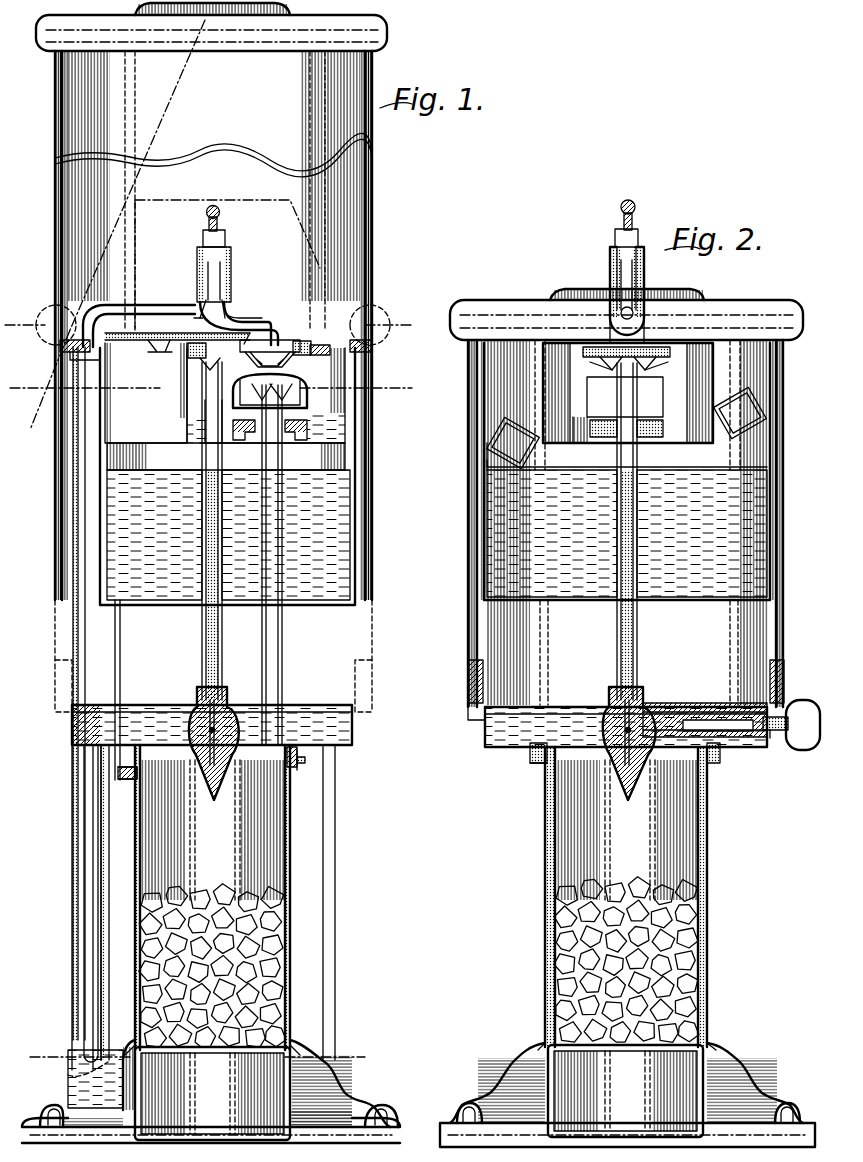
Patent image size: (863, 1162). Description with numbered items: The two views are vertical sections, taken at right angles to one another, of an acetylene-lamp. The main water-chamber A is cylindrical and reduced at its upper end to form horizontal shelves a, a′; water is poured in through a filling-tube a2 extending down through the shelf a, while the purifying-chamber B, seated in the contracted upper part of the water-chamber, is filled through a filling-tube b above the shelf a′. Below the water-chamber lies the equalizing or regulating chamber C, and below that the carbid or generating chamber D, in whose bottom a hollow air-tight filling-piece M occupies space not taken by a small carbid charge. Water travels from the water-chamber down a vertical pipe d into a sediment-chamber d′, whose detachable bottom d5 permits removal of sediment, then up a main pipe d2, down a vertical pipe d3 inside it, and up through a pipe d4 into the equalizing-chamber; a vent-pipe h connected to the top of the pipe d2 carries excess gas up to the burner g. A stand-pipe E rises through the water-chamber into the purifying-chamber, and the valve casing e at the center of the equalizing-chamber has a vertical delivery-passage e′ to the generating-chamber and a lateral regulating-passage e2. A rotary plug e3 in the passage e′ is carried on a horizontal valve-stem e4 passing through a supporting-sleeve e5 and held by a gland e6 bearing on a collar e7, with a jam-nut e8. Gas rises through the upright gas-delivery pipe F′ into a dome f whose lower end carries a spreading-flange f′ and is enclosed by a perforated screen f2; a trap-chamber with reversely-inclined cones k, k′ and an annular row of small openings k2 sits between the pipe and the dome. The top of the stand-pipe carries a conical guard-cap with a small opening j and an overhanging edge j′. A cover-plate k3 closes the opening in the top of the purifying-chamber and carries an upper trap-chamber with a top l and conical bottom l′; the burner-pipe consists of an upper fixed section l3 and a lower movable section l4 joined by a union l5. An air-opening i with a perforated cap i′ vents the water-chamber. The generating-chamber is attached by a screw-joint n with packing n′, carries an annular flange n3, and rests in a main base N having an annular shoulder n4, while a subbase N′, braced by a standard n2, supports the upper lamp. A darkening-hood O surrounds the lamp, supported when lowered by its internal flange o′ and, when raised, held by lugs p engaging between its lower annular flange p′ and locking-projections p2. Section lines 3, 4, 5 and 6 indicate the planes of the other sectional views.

In FIG. 1, the darkening-hood O is at (211, 363).
In FIG. 2, the darkening-hood O is at (784, 540).
In FIG. 1, the internal flange o′ is at (290, 15).
In FIG. 2, the internal flange o′ is at (728, 302).
In FIG. 1, the main water-chamber A is at (227, 476).
In FIG. 2, the main water-chamber A is at (627, 471).
In FIG. 2, the purifying-chamber B is at (678, 362).
In FIG. 1, the equalizing or regulating chamber C is at (212, 725).
In FIG. 2, the equalizing or regulating chamber C is at (626, 727).
In FIG. 1, the carbid or generating chamber D is at (188, 866).
In FIG. 2, the carbid or generating chamber D is at (608, 860).
In FIG. 1, the stand-pipe E is at (212, 531).
In FIG. 2, the stand-pipe E is at (627, 531).
In FIG. 1, the tube F′ is at (272, 655).
In FIG. 1, the filling-piece M is at (212, 1093).
In FIG. 2, the filling-piece M is at (625, 1091).
In FIG. 1, the main base N is at (211, 1128).
In FIG. 2, the main base N is at (627, 1125).
In FIG. 1, the subbase N′ is at (345, 1090).
In FIG. 2, the subbase N′ is at (513, 1070).
In FIG. 1, the horizontal shelf a is at (246, 327).
In FIG. 2, the horizontal shelf a is at (513, 442).
In FIG. 2, the horizontal shelf a′ is at (745, 440).
In FIG. 2, the filling-tube a2 is at (507, 454).
In FIG. 1, the filling-tube b is at (288, 360).
In FIG. 2, the filling-tube b is at (740, 412).
In FIG. 1, the vertical pipe d is at (119, 641).
In FIG. 1, the sediment-chamber d′ is at (85, 1080).
In FIG. 1, the main pipe d2 is at (84, 957).
In FIG. 1, the vertical pipe d3 is at (93, 871).
In FIG. 1, the pipe d4 is at (72, 812).
In FIG. 1, the bottom d5 is at (70, 1088).
In FIG. 1, the valve casing e is at (226, 724).
In FIG. 2, the valve casing e is at (608, 721).
In FIG. 1, the vertical delivery-passage e′ is at (226, 703).
In FIG. 2, the vertical delivery-passage e′ is at (643, 703).
In FIG. 1, the lateral regulating-passage e2 is at (197, 700).
In FIG. 1, the rotary plug e3 is at (200, 728).
In FIG. 2, the rotary plug e3 is at (626, 742).
In FIG. 2, the valve-stem e4 is at (700, 718).
In FIG. 2, the supporting-sleeve e5 is at (672, 708).
In FIG. 2, the gland e6 is at (800, 750).
In FIG. 2, the collar or shoulder e7 is at (765, 732).
In FIG. 2, the jam-nut e8 is at (775, 738).
In FIG. 1, the dome f is at (302, 392).
In FIG. 2, the dome f is at (625, 407).
In FIG. 1, the annular horizontal flange f′ is at (295, 462).
In FIG. 1, the perforated chamber or screen f2 is at (226, 457).
In FIG. 2, the perforated chamber or screen f2 is at (643, 442).
In FIG. 1, the burner g is at (220, 215).
In FIG. 2, the burner g is at (619, 213).
In FIG. 1, the vent-pipe h is at (86, 693).
In FIG. 2, the vent-pipe h is at (644, 275).
In FIG. 1, the air-opening i is at (158, 340).
In FIG. 1, the perforated cap i′ is at (150, 352).
In FIG. 2, the small opening j is at (605, 345).
In FIG. 1, the edge j′ is at (185, 370).
In FIG. 2, the edge j′ is at (633, 364).
In FIG. 1, the inclined cone k is at (316, 432).
In FIG. 1, the inclined cone k′ is at (278, 412).
In FIG. 1, the small openings k2 is at (327, 341).
In FIG. 1, the plate k3 is at (305, 341).
In FIG. 1, the top l is at (280, 346).
In FIG. 1, the inclined cone l′ is at (227, 356).
In FIG. 2, the inclined cone l′ is at (625, 364).
In FIG. 1, the upper fixed section l3 is at (215, 262).
In FIG. 2, the upper fixed section l3 is at (628, 263).
In FIG. 1, the lower movable section l4 is at (276, 322).
In FIG. 1, the union l5 is at (232, 302).
In FIG. 1, the screw-joint n is at (287, 760).
In FIG. 2, the screw-joint n is at (530, 755).
In FIG. 1, the packing n′ is at (297, 770).
In FIG. 2, the packing n′ is at (535, 765).
In FIG. 1, the brace or standard n2 is at (335, 958).
In FIG. 1, the annular flange n3 is at (290, 1040).
In FIG. 2, the annular flange n3 is at (715, 1040).
In FIG. 1, the annular shoulder n4 is at (386, 1112).
In FIG. 1, the lug p is at (382, 350).
In FIG. 1, the internal annular flange p′ is at (360, 368).
In FIG. 2, the internal annular flange p′ is at (470, 728).
In FIG. 1, the locking-projection p2 is at (60, 346).
In FIG. 2, the locking-projection p2 is at (470, 683).
In FIG. 1, the section line 3 3 is at (208, 325).
In FIG. 1, the section line 4 4 is at (211, 388).
In FIG. 1, the section line 5 5 is at (193, 1057).
In FIG. 1, the section line 6 6 is at (118, 224).